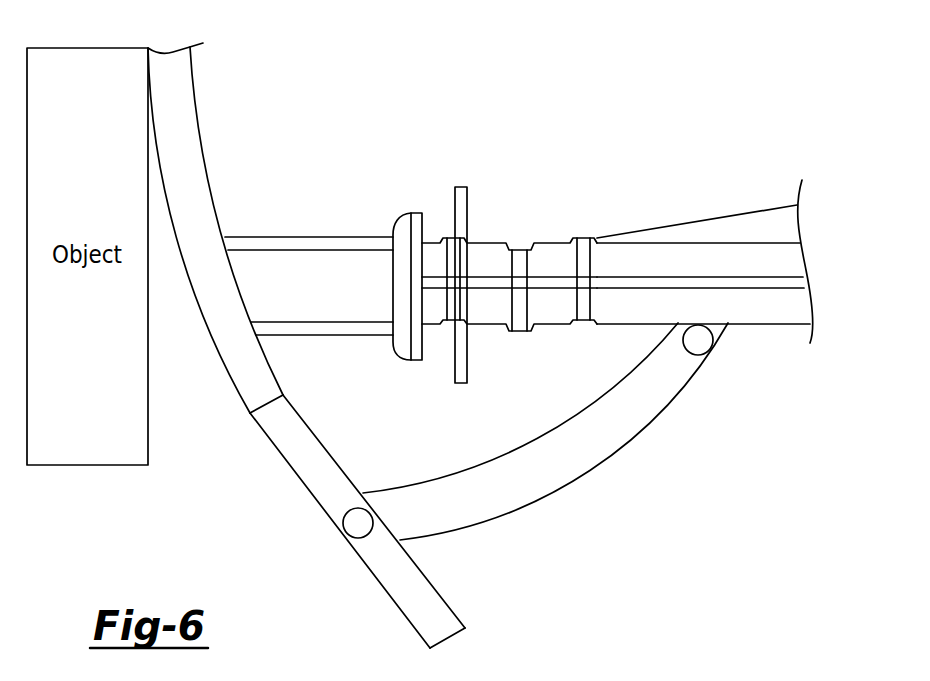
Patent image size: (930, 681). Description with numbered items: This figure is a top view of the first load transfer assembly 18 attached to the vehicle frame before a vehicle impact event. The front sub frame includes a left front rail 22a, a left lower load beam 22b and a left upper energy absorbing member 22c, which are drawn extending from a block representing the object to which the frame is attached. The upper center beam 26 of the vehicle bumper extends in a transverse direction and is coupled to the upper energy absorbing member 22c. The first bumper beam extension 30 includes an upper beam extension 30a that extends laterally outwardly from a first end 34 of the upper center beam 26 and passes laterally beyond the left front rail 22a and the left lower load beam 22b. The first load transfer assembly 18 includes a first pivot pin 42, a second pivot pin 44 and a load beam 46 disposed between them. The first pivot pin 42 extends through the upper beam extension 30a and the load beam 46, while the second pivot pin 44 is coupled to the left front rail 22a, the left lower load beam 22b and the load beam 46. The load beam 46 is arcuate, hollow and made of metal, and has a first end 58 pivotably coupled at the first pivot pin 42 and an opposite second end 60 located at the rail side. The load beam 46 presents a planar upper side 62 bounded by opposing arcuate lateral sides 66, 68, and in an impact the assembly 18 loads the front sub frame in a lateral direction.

The first load transfer assembly 18 is at (502, 493).
The left front rail 22a is at (612, 267).
The left lower load beam 22b is at (765, 228).
The left upper energy absorbing member 22c is at (334, 250).
The upper center beam 26 is at (177, 70).
The first bumper beam extension 30 is at (316, 527).
The upper beam extension 30a is at (433, 633).
The first end of the upper center beam 34 is at (253, 392).
The first pivot pin 42 is at (358, 523).
The second pivot pin 44 is at (698, 342).
The load beam 46 is at (599, 451).
The first end of the load beam 58 is at (400, 533).
The second end of the load beam 60 is at (725, 342).
The planar upper side 62 is at (457, 497).
The arcuate lateral side 66 is at (538, 437).
The arcuate lateral side 68 is at (658, 415).